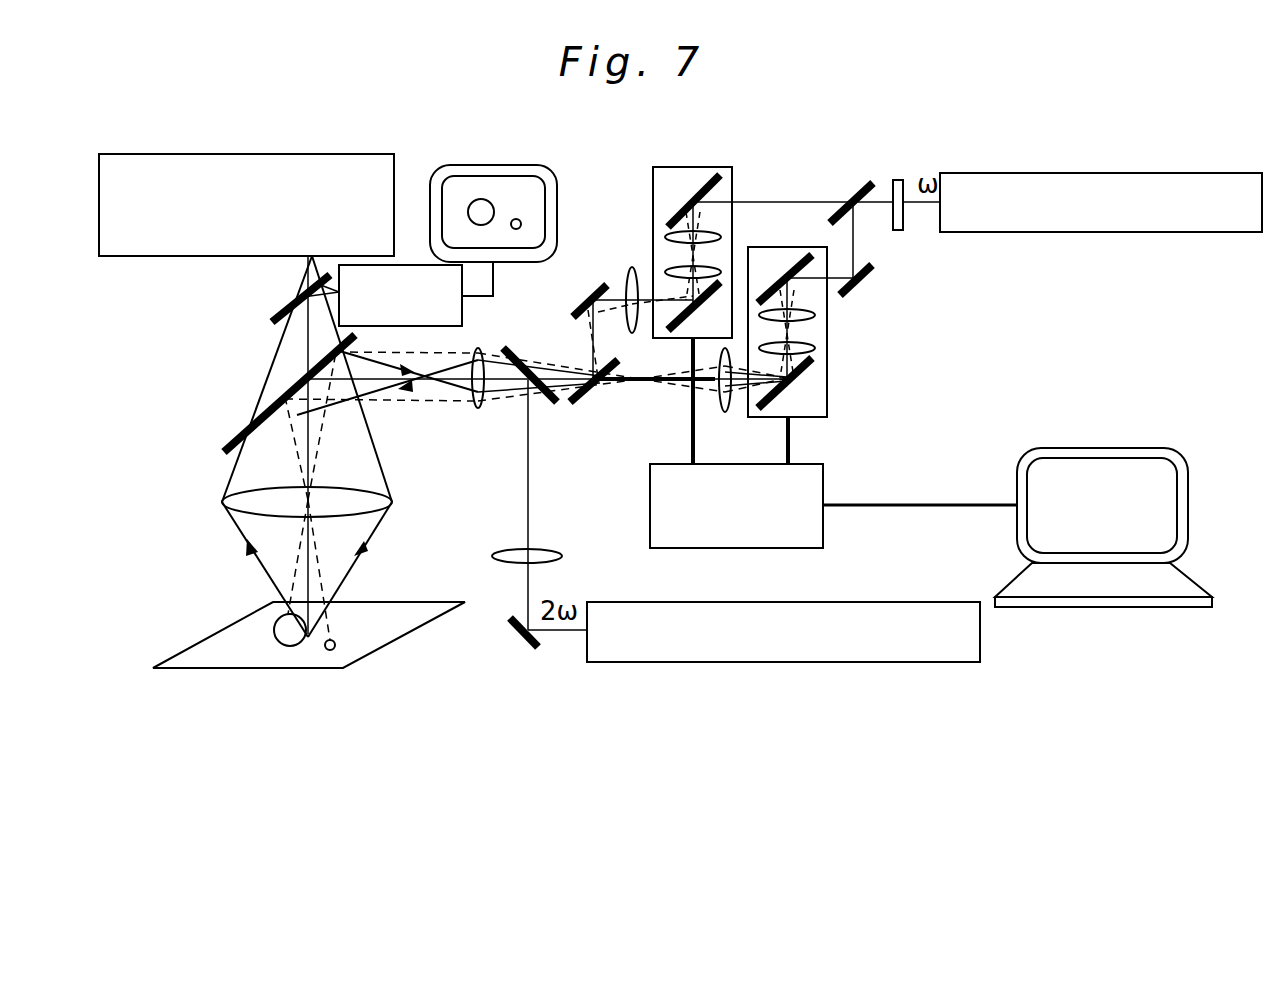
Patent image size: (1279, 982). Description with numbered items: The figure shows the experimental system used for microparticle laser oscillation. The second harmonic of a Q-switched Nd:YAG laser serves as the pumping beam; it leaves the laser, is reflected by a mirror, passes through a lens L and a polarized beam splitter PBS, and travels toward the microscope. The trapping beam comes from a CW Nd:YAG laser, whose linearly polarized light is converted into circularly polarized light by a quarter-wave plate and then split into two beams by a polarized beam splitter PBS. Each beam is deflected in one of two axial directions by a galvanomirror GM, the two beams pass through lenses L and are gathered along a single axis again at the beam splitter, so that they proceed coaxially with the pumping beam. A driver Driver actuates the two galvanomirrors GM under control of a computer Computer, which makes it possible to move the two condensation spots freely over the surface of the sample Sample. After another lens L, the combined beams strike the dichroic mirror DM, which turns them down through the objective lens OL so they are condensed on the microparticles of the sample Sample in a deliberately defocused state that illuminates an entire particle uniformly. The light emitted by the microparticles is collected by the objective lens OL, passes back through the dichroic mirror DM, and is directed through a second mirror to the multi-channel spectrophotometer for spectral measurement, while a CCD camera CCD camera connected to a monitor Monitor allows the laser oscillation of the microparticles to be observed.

The monitor Monitor is at (493, 212).
The element CCD camera is at (400, 296).
The dichroic mirror DM is at (280, 393).
The objective lens OL is at (326, 502).
The lens L is at (603, 404).
The polarized beam splitter PBS is at (688, 289).
The galvanomirror GM is at (740, 275).
The driver Driver is at (833, 443).
The computer Computer is at (1103, 527).
The sample Sample is at (309, 653).